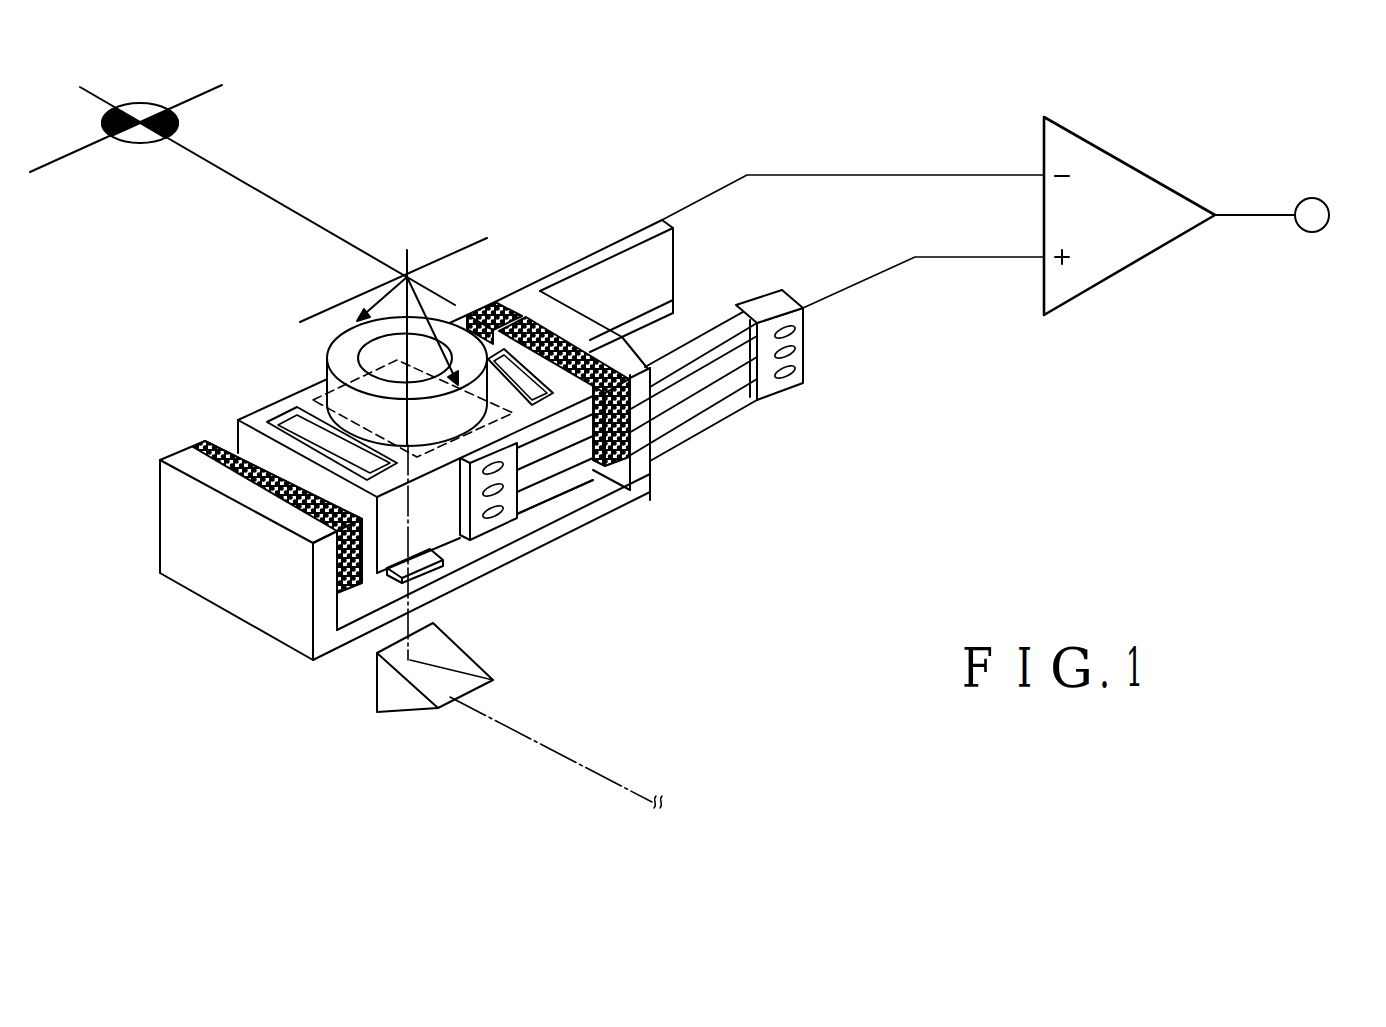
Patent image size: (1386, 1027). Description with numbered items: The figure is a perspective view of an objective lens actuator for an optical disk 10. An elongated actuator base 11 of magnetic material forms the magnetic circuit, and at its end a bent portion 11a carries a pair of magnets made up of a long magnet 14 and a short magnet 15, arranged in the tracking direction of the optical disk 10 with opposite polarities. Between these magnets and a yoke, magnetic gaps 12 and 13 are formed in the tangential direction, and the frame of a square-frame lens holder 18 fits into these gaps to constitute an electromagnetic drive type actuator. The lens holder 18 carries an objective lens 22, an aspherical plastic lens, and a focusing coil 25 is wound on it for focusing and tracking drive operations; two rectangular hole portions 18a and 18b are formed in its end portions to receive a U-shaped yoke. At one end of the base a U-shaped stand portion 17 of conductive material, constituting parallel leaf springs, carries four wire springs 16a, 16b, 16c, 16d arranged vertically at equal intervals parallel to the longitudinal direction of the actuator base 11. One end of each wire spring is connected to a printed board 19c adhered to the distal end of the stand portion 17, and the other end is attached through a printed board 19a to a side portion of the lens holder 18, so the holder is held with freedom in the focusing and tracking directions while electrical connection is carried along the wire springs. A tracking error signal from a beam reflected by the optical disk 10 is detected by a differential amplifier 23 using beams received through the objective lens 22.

The optical disk 10 is at (140, 105).
The actuator base 11 is at (295, 670).
The bent portion 11a is at (172, 522).
The magnetic gap 12 is at (257, 440).
The magnetic gap 13 is at (558, 350).
The long magnet 14 is at (212, 440).
The short magnet 15 is at (350, 578).
The wire spring 16a is at (706, 420).
The wire spring 16b is at (637, 413).
The wire spring 16c is at (637, 435).
The wire spring 16d is at (555, 497).
The stand portion 17 is at (740, 405).
The lens holder 18 is at (404, 504).
The hole portion 18a is at (328, 445).
The hole portion 18b is at (548, 410).
The printed board 19a is at (493, 517).
The printed board 19c is at (805, 350).
The objective lens 22 is at (340, 343).
The differential amplifier 23 is at (1157, 178).
The focusing coil 25 is at (433, 500).